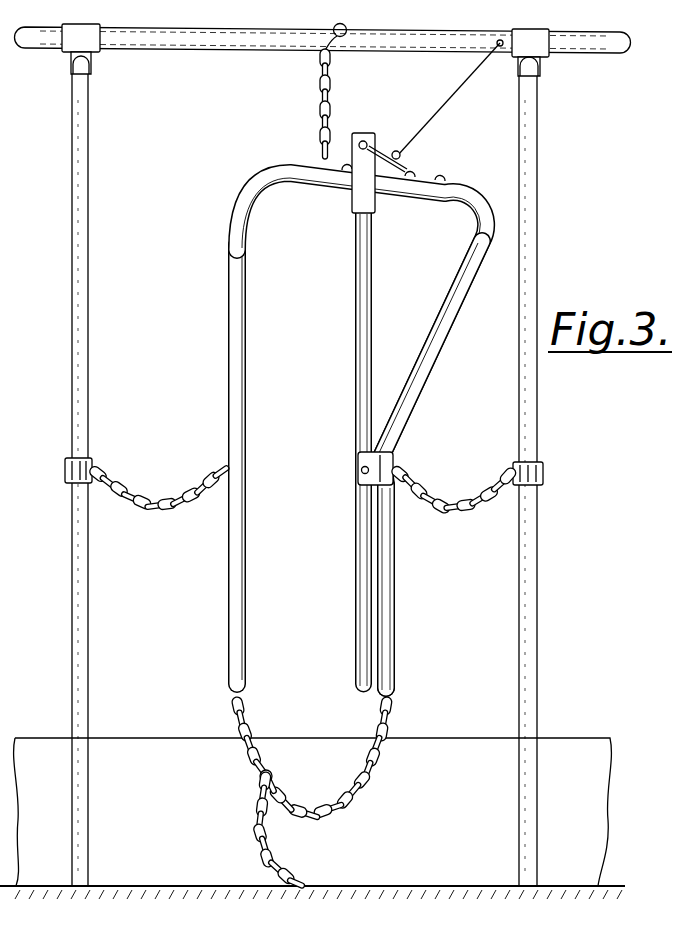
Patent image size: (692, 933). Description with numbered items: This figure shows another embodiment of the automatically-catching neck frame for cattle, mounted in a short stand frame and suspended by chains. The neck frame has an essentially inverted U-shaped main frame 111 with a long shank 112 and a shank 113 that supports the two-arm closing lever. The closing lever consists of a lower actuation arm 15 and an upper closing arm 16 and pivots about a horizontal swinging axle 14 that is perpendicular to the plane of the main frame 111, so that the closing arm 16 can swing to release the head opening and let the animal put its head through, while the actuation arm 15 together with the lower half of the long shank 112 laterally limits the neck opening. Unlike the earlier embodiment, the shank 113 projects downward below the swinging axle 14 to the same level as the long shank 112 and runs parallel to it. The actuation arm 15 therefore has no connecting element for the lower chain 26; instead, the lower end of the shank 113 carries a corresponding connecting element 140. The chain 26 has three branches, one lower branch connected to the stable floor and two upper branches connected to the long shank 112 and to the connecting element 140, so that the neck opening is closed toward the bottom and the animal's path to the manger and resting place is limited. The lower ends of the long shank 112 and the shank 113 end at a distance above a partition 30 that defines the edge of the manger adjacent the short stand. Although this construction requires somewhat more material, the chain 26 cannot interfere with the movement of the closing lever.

The main frame 111 is at (329, 427).
The long shank 112 is at (232, 572).
The shank 113 is at (440, 350).
The swinging axle 14 is at (360, 470).
The actuation arm 15 is at (356, 570).
The closing arm 16 is at (356, 331).
The connecting element 140 is at (393, 701).
The chain 26 is at (247, 791).
The partition 30 is at (161, 819).